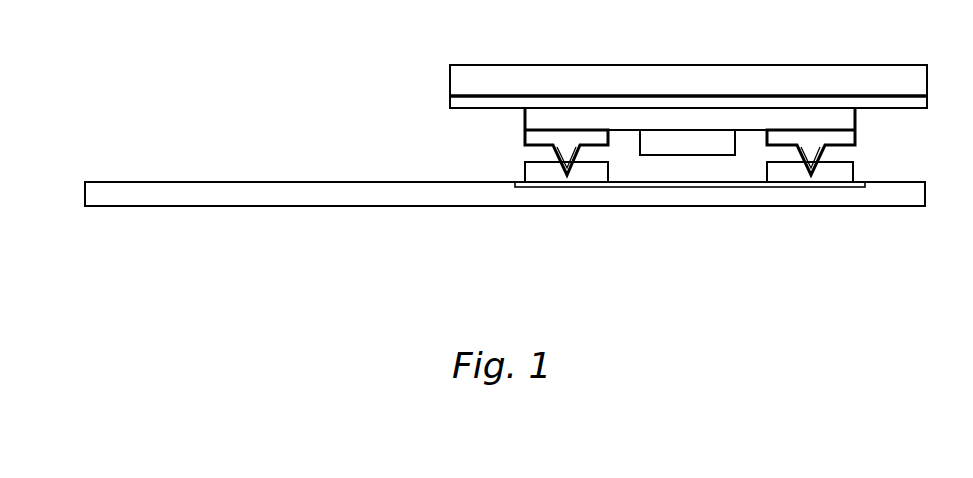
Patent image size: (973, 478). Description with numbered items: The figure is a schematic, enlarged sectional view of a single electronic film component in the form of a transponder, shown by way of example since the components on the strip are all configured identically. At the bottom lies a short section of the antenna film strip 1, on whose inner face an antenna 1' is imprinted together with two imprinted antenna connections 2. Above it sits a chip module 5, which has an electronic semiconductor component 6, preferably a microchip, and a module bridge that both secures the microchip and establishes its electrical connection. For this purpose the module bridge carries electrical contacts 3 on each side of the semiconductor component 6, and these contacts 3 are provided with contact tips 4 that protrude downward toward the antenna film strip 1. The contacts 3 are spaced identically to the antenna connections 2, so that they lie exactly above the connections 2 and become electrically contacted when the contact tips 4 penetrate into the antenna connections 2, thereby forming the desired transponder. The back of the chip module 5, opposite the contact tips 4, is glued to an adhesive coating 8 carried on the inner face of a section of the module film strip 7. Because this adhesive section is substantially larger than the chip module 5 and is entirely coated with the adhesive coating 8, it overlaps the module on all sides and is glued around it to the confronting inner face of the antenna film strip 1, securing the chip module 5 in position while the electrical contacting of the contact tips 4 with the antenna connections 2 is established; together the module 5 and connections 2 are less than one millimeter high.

The antenna film strip 1 is at (505, 215).
The antenna 1' is at (690, 217).
The antenna connections 2 is at (587, 173).
The electrical contacts 3 is at (528, 138).
The contact tips 4 is at (567, 151).
The chip module 5 is at (758, 126).
The electronic semiconductor component 6 is at (693, 138).
The module film strip 7 is at (587, 82).
The adhesive coating 8 is at (803, 101).